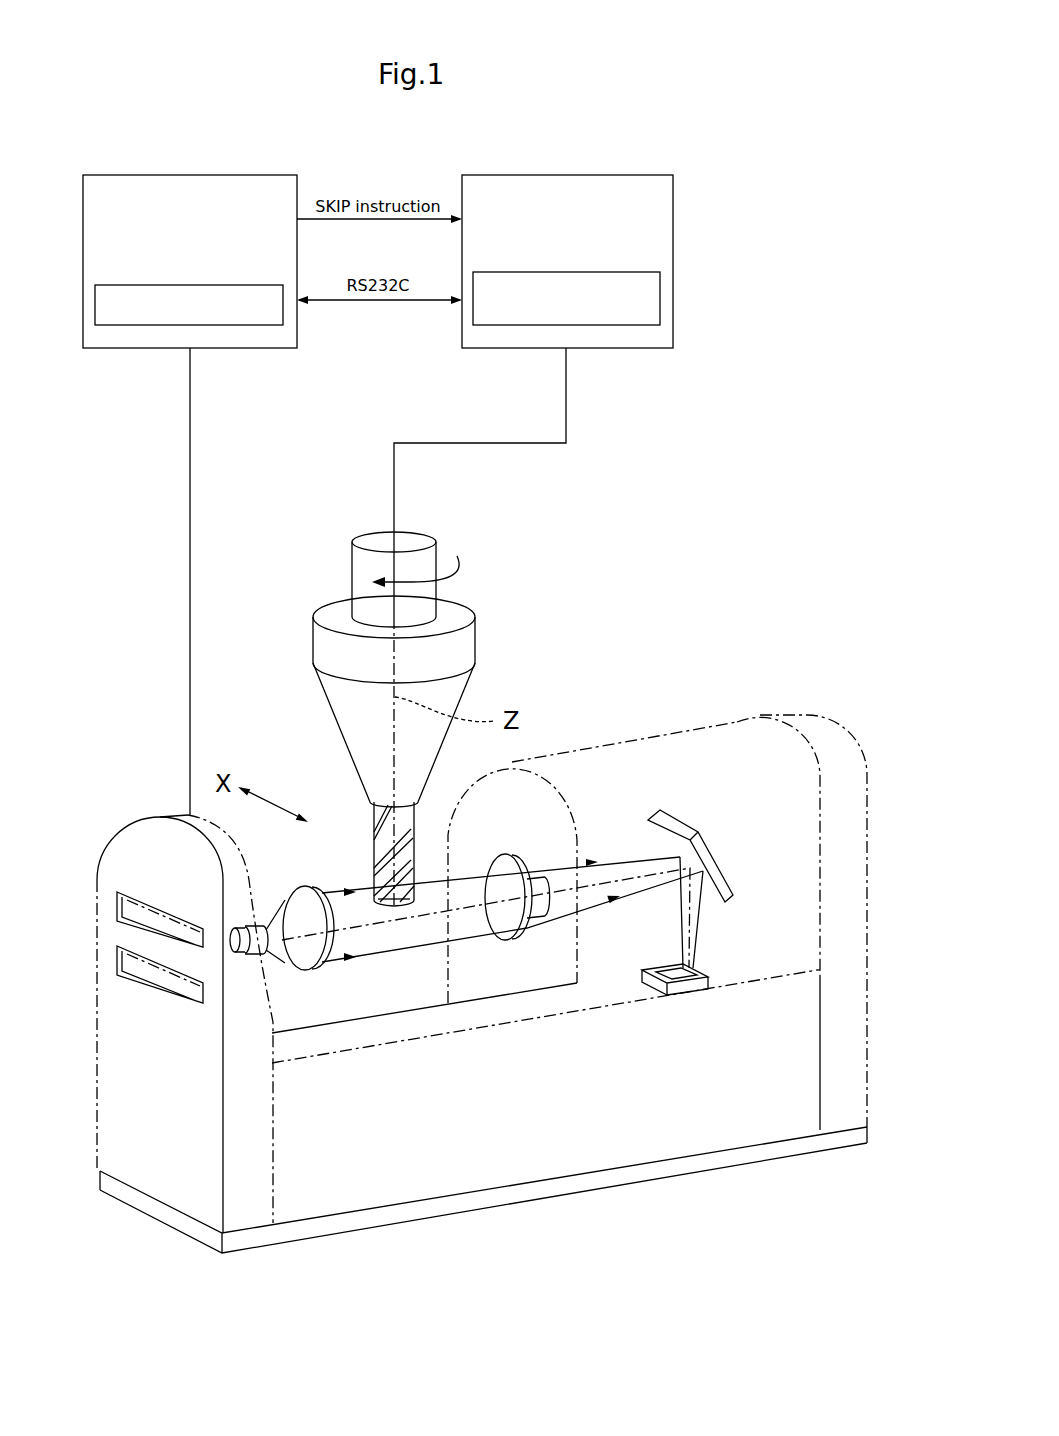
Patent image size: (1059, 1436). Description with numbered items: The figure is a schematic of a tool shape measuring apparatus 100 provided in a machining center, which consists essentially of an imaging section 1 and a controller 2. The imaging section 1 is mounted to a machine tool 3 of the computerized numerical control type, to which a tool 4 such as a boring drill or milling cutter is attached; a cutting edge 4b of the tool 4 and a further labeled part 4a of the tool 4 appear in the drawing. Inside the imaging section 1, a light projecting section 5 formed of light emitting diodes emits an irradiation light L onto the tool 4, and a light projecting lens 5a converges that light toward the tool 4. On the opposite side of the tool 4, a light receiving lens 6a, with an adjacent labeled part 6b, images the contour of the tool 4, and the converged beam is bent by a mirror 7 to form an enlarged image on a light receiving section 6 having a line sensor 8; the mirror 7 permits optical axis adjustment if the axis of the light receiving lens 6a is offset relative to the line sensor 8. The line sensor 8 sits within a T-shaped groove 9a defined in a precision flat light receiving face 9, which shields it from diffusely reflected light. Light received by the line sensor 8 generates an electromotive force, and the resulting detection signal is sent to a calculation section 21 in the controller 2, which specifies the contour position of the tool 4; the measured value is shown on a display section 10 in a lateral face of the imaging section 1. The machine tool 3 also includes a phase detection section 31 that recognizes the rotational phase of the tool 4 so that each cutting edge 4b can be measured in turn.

The tool shape measuring apparatus 100 is at (744, 148).
The imaging section 1 is at (455, 918).
The controller 2 is at (188, 175).
The calculation section 21 is at (252, 325).
The machine tool 3 is at (571, 175).
The phase detection section 31 is at (633, 325).
The tool 4 is at (374, 881).
The tool tip 4a is at (400, 907).
The cutting edge 4b is at (388, 866).
The light projecting section 5 is at (262, 930).
The light projecting lens 5a is at (313, 970).
The light receiving section 6 is at (576, 771).
The light receiving lens 6a is at (500, 857).
The lens holder 6b is at (545, 905).
The mirror 7 is at (710, 851).
The line sensor 8 is at (688, 992).
The light receiving face 9 is at (672, 982).
The T-shaped groove 9a is at (672, 968).
The display section 10 is at (145, 970).
The irradiation light L is at (585, 858).